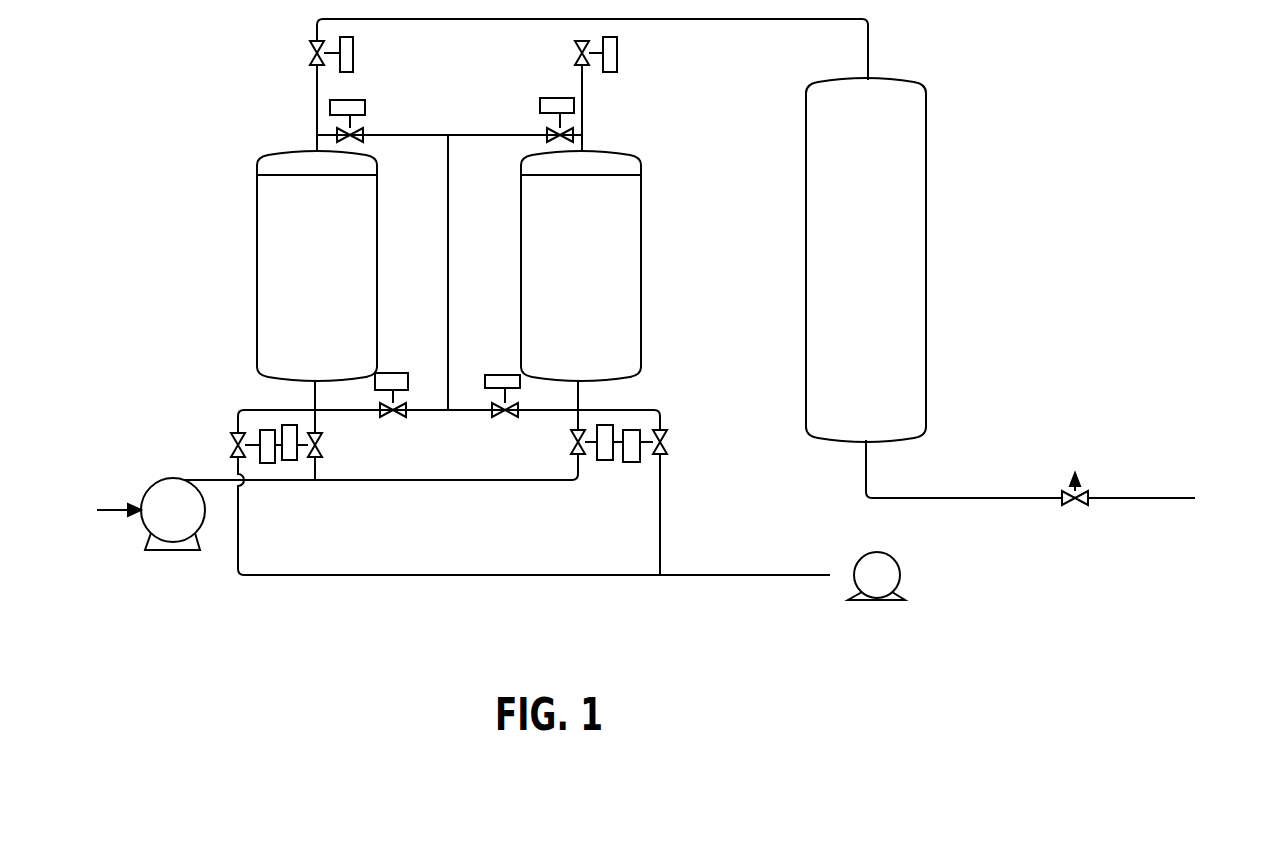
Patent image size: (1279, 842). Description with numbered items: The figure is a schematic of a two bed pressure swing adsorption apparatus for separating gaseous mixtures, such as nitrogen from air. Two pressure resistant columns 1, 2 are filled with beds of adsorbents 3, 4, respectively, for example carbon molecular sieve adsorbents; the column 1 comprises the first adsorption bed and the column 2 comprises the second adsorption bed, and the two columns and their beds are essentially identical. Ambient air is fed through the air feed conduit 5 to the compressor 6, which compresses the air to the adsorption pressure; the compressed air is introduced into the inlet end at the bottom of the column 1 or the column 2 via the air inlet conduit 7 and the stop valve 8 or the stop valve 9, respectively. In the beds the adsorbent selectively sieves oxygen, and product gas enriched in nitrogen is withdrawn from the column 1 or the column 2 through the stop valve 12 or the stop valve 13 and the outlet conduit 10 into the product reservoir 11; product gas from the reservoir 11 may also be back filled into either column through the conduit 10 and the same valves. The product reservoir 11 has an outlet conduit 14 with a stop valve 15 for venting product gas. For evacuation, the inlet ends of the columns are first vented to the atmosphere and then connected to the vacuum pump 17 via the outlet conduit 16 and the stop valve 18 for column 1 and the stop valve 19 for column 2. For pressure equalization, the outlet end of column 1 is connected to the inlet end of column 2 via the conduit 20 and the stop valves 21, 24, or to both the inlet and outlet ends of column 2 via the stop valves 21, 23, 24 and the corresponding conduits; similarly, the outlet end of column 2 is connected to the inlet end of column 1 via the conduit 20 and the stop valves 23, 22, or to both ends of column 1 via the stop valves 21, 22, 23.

The column 1 is at (257, 189).
The column 2 is at (521, 200).
The bed of adsorbent 3 is at (317, 270).
The bed of adsorbent 4 is at (581, 270).
The air feed conduit 5 is at (120, 511).
The compressor 6 is at (192, 510).
The air inlet conduit 7 is at (200, 480).
The stop valve 8 is at (323, 445).
The stop valve 9 is at (571, 438).
The outlet conduit 10 is at (478, 19).
The product reservoir 11 is at (866, 260).
The stop valve 12 is at (310, 53).
The stop valve 13 is at (578, 56).
The outlet conduit 14 is at (985, 498).
The stop valve 15 is at (1162, 469).
The outlet conduit 16 is at (452, 575).
The vacuum pump 17 is at (885, 575).
The stop valve 18 is at (236, 438).
The stop valve 19 is at (668, 446).
The conduit 20 is at (448, 283).
The stop valve 21 is at (362, 140).
The stop valve 22 is at (398, 418).
The stop valve 23 is at (546, 137).
The stop valve 24 is at (498, 417).